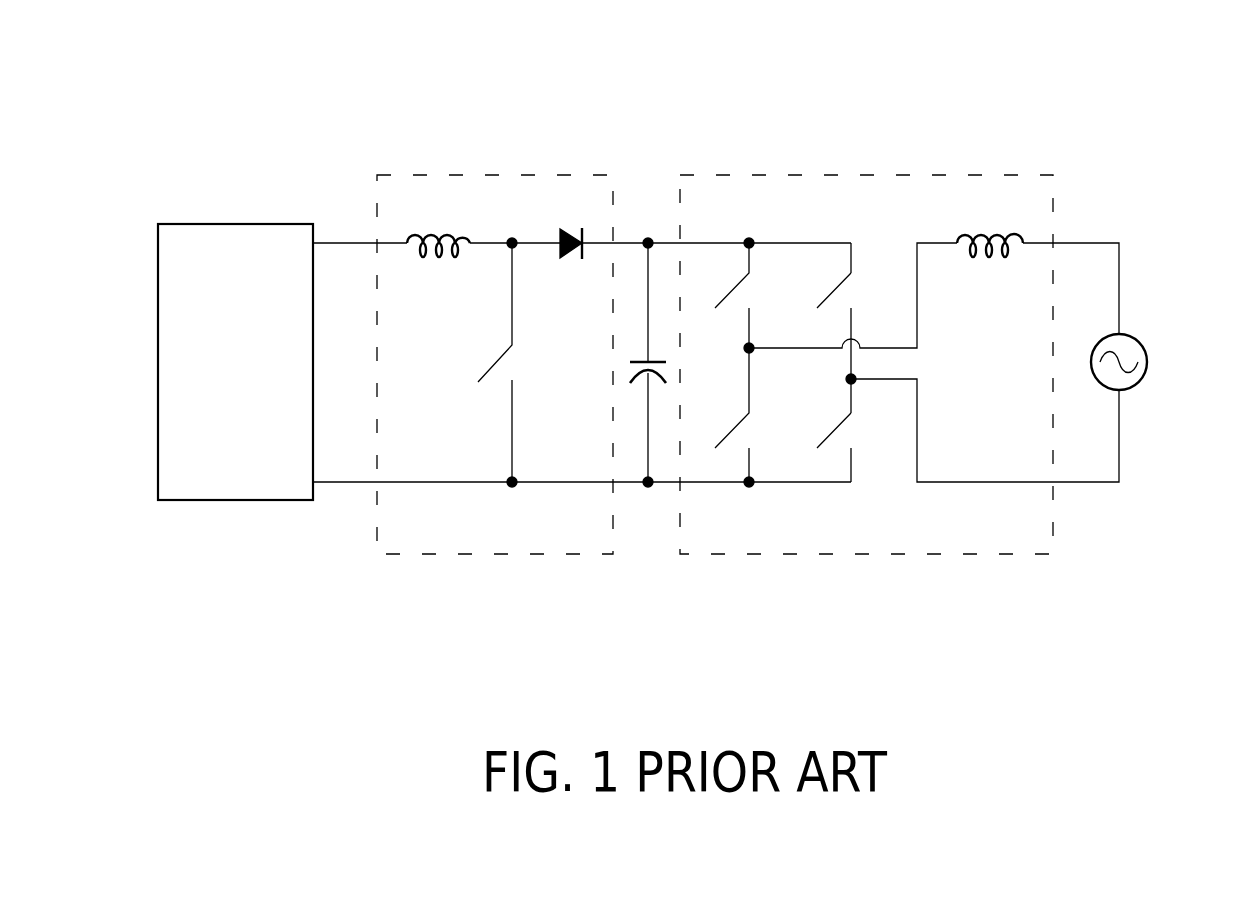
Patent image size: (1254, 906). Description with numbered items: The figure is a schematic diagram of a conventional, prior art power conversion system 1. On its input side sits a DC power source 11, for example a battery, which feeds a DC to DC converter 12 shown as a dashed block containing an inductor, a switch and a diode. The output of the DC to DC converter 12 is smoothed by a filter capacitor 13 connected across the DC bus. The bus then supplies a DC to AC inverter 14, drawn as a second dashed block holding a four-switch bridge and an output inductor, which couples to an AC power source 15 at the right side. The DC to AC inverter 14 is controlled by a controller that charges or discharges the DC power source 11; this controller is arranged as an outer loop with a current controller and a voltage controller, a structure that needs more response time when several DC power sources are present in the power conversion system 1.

The power conversion system 1 is at (1160, 103).
The DC power source 11 is at (232, 224).
The DC to DC converter 12 is at (494, 175).
The filter capacitor 13 is at (659, 355).
The DC to AC inverter 14 is at (866, 175).
The AC power source 15 is at (1142, 345).